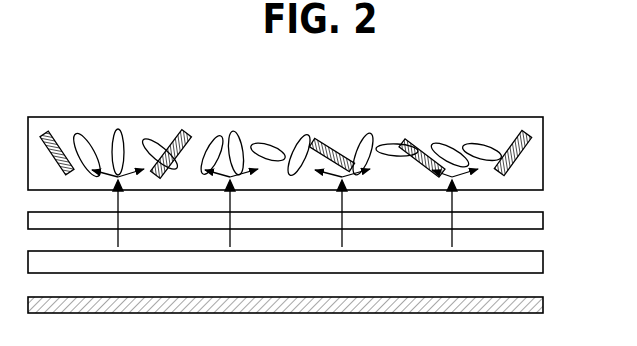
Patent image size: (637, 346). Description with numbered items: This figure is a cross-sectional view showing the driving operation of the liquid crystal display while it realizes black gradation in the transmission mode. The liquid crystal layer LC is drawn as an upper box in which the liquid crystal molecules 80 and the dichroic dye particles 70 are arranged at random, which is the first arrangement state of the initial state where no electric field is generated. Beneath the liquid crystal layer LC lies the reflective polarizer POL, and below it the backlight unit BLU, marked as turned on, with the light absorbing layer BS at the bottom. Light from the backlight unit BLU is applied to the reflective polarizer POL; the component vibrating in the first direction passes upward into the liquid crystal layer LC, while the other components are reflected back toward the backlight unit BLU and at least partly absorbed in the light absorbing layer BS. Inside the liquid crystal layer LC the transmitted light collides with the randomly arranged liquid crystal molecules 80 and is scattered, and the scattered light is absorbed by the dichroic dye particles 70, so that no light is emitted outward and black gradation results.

The liquid crystal molecules 80 is at (120, 131).
The dichroic dye particles 70 is at (184, 135).
The liquid crystal layer LC is at (544, 152).
The reflective polarizer POL is at (536, 222).
The backlight unit BLU is at (536, 262).
The light absorbing layer BS is at (536, 305).